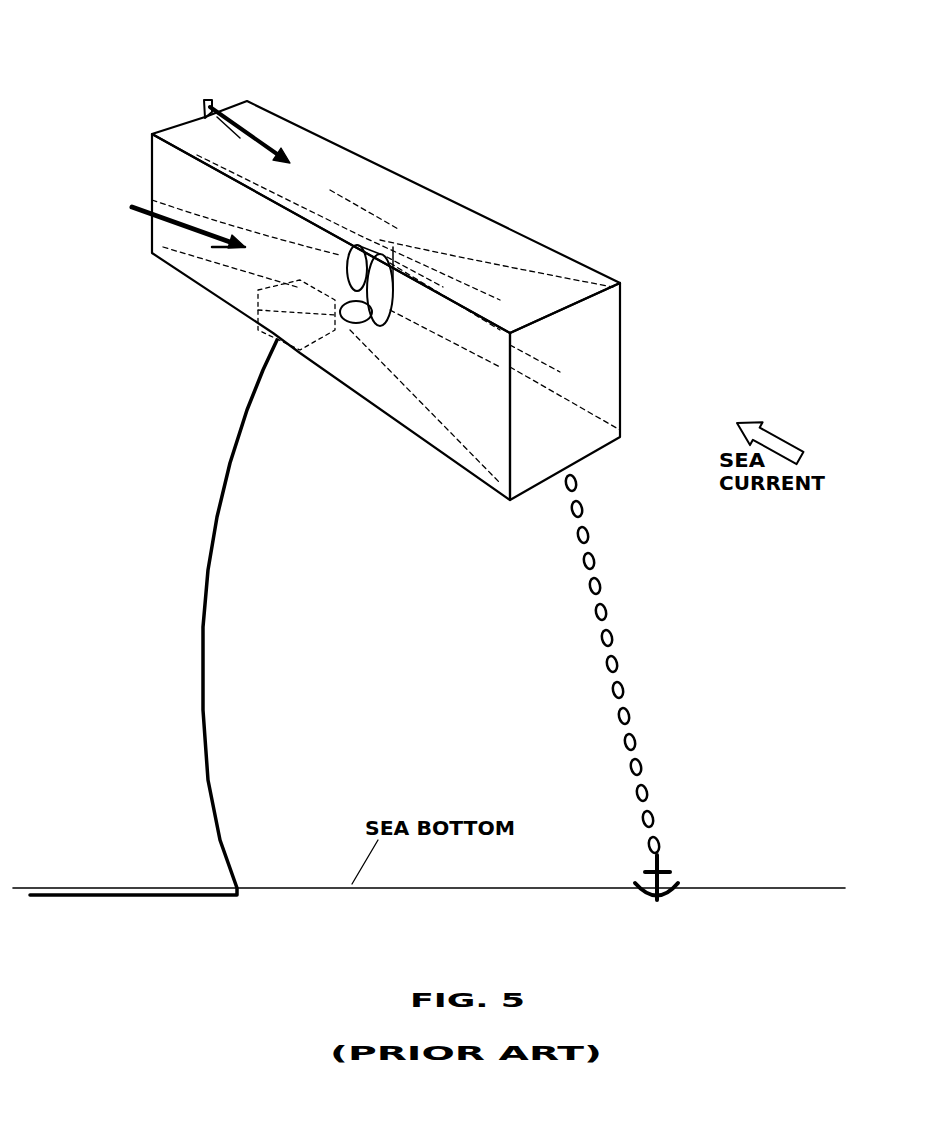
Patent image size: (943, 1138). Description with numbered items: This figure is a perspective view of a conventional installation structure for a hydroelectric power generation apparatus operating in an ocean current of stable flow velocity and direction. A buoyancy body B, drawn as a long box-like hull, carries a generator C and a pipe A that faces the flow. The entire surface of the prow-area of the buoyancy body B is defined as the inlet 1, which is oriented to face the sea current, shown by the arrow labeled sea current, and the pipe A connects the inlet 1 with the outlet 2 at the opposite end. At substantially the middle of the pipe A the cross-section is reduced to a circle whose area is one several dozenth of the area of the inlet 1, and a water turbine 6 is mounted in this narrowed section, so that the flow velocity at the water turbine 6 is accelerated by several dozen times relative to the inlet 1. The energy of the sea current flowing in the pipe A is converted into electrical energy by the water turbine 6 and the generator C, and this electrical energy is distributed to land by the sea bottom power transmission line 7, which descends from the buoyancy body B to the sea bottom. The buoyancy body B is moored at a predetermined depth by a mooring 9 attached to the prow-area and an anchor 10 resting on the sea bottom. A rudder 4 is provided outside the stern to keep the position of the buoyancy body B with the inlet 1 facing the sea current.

The inlet 1 is at (579, 439).
The outlet 2 is at (168, 157).
The rudder 4 is at (253, 58).
The water turbine 6 is at (355, 325).
The sea bottom power transmission line 7 is at (216, 669).
The mooring 9 is at (690, 657).
The anchor 10 is at (755, 833).
The pipe A is at (589, 324).
The buoyancy body B is at (405, 164).
The generator C is at (267, 318).